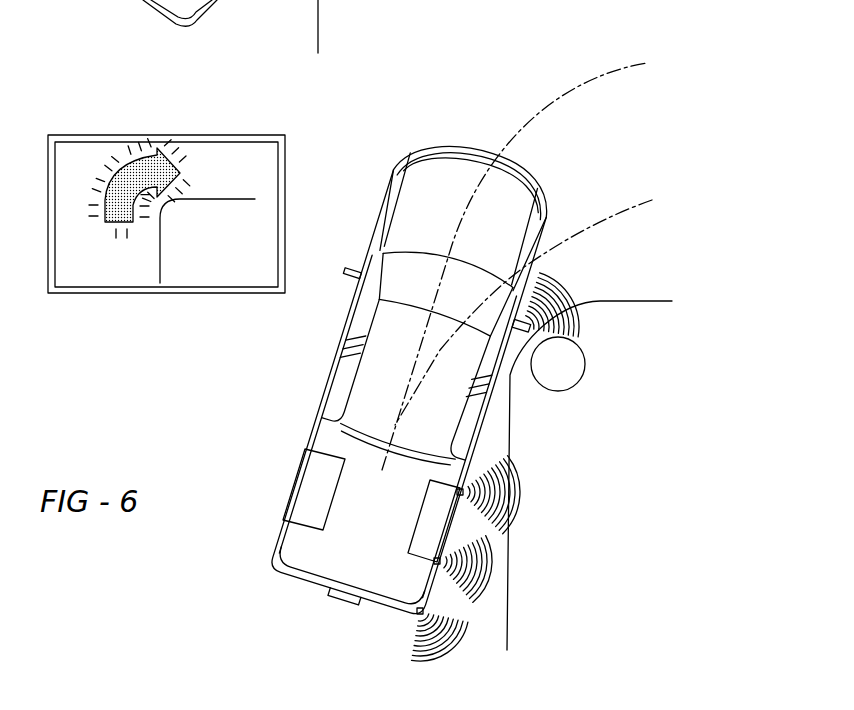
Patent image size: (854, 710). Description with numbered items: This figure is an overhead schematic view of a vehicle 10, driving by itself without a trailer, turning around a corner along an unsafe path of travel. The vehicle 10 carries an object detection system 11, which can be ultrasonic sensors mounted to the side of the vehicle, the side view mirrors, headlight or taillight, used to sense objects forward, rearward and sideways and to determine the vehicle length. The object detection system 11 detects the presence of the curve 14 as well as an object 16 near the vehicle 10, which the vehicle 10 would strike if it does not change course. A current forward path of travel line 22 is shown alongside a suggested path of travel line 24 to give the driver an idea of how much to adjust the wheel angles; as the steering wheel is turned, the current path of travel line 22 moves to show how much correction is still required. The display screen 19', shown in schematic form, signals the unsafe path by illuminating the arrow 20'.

The vehicle 10 is at (392, 369).
The object detection system 11 is at (535, 325).
The curve 14 is at (612, 302).
The object 16 is at (562, 391).
The display screen 19' is at (205, 205).
The arrow 20' is at (127, 145).
The current forward path of travel line 22 is at (613, 213).
The suggested path of travel line 24 is at (617, 68).